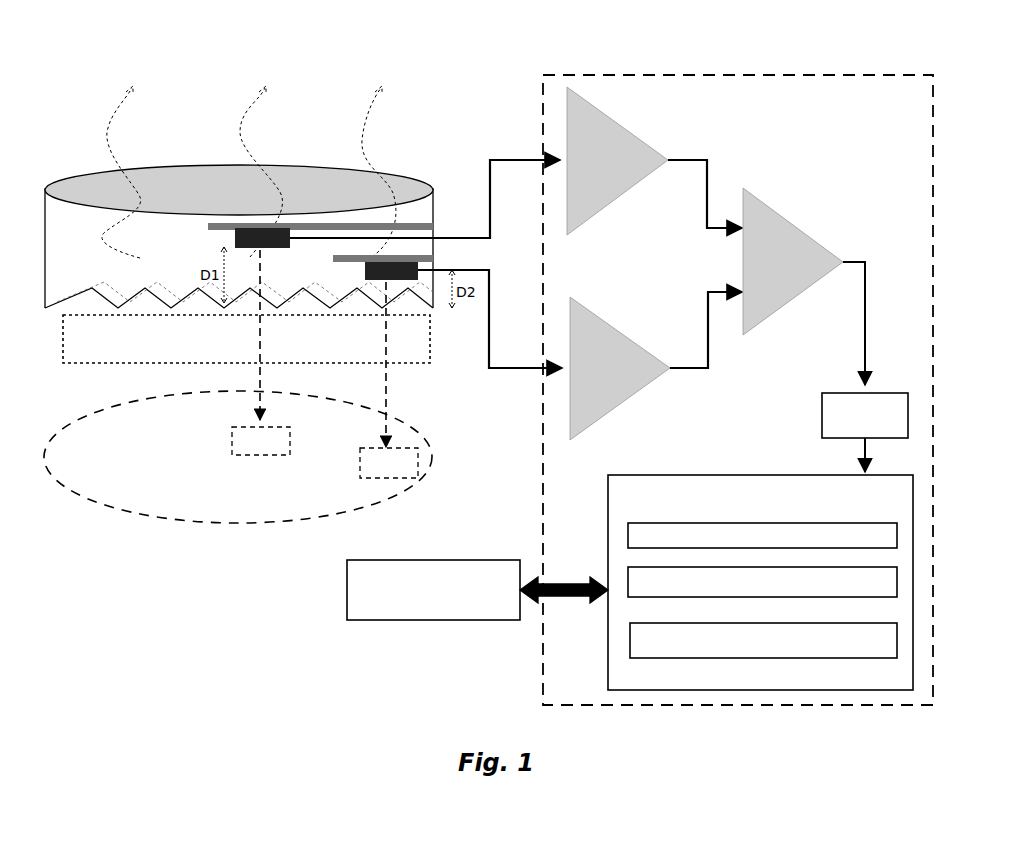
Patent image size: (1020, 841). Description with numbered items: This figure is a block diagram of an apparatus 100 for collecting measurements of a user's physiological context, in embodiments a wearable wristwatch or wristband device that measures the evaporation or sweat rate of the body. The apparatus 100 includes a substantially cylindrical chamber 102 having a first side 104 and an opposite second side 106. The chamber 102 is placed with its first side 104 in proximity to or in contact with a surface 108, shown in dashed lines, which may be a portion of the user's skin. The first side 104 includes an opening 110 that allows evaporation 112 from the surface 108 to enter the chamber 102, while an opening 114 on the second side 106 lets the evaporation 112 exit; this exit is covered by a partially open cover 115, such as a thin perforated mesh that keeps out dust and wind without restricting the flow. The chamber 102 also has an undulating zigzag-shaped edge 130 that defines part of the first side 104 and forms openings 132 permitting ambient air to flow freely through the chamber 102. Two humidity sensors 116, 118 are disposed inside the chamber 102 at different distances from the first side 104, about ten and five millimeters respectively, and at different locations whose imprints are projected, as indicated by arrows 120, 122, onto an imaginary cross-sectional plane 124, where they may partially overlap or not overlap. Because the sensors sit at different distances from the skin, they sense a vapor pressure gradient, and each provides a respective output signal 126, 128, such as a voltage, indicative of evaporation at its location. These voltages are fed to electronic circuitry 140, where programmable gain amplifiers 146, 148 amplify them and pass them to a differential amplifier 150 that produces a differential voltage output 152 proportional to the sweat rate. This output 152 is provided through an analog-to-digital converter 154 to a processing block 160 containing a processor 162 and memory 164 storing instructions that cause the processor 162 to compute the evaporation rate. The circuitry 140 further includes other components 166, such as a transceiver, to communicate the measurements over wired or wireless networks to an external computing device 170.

The apparatus 100 is at (488, 66).
The chamber 102 is at (239, 248).
The first side 104 is at (60, 314).
The second side 106 is at (412, 180).
The surface 108 is at (246, 339).
The opening 110 is at (147, 313).
The evaporation 112 is at (108, 126).
The opening 114 is at (191, 178).
The partially open cover 115 is at (72, 184).
The sensor 116 is at (402, 260).
The sensor 118 is at (281, 232).
The arrow 120 is at (262, 372).
The arrow 122 is at (388, 400).
The imaginary cross-sectional plane 124 is at (238, 457).
The output signal 126 is at (510, 375).
The output signal 128 is at (517, 165).
The zigzag-shaped edge 130 is at (76, 292).
The openings 132 is at (194, 300).
The electronic circuitry 140 is at (738, 390).
The programmable gain amplifier PGA1 146 is at (613, 326).
The programmable gain amplifier PGA2 148 is at (641, 142).
The differential amplifier 150 is at (786, 218).
The differential voltage output 152 is at (868, 300).
The analog-to-digital converter 154 is at (865, 432).
The processing block 160 is at (760, 582).
The processor 162 is at (762, 535).
The memory 164 is at (762, 582).
The other components 166 is at (763, 640).
The external computing device 170 is at (477, 590).